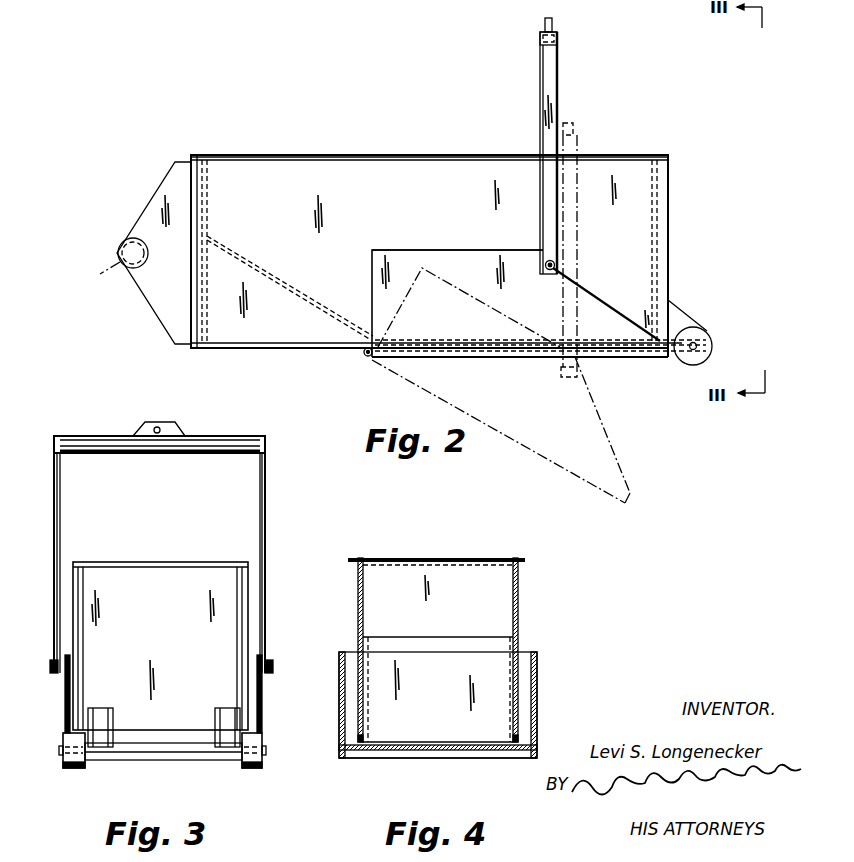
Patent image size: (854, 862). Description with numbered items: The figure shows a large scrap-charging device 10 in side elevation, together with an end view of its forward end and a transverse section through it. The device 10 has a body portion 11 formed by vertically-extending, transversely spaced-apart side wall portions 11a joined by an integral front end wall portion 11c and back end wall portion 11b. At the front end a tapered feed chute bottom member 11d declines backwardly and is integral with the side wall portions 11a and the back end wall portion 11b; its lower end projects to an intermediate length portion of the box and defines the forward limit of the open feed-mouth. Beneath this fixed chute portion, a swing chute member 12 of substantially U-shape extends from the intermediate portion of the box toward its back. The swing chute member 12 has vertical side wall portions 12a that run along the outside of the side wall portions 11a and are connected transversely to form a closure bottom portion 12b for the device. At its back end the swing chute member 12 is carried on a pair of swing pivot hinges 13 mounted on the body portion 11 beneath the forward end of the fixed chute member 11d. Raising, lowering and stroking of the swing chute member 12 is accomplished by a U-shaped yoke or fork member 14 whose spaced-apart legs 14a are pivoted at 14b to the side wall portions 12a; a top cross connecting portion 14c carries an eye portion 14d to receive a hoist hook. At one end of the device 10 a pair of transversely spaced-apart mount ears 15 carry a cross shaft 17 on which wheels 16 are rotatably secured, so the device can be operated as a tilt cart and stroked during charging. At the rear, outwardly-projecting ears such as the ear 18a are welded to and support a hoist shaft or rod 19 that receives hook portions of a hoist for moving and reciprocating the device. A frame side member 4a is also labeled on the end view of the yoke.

In FIG. 2, the device 10 is at (375, 196).
In FIG. 3, the device 10 is at (172, 601).
In FIG. 4, the device 10 is at (453, 558).
In FIG. 2, the body portion 11 is at (352, 158).
In FIG. 4, the body portion 11 is at (518, 602).
In FIG. 2, the side wall portions 11a is at (471, 160).
In FIG. 4, the side wall portions 11a is at (358, 580).
In FIG. 2, the back end wall portion 11b is at (207, 191).
In FIG. 2, the front end wall portion 11c is at (661, 192).
In FIG. 3, the front end wall portion 11c is at (175, 566).
In FIG. 2, the tapered feed chute bottom member 11d is at (259, 266).
In FIG. 4, the tapered feed chute bottom member 11d is at (445, 640).
In FIG. 2, the swing chute member 12 is at (530, 360).
In FIG. 4, the swing chute member 12 is at (538, 728).
In FIG. 2, the chute side wall portions 12a is at (463, 250).
In FIG. 3, the chute side wall portions 12a is at (65, 708).
In FIG. 4, the chute side wall portions 12a is at (339, 672).
In FIG. 2, the closure bottom portion 12b is at (608, 354).
In FIG. 4, the closure bottom portion 12b is at (461, 750).
In FIG. 2, the swing pivot hinges 13 is at (363, 354).
In FIG. 2, the yoke or fork member 14 is at (558, 100).
In FIG. 3, the yoke or fork member 14 is at (265, 522).
In FIG. 2, the legs 14a is at (550, 70).
In FIG. 3, the legs 14a is at (265, 470).
In FIG. 2, the pivot 14b is at (556, 268).
In FIG. 3, the pivot 14b is at (55, 672).
In FIG. 2, the top cross connecting portion 14c is at (558, 39).
In FIG. 3, the top cross connecting portion 14c is at (222, 436).
In FIG. 2, the eye portion 14d is at (545, 23).
In FIG. 3, the eye portion 14d is at (165, 421).
In FIG. 2, the mount ears 15 is at (690, 318).
In FIG. 3, the mount ears 15 is at (92, 708).
In FIG. 2, the wheels 16 is at (708, 336).
In FIG. 3, the wheels 16 is at (81, 768).
In FIG. 2, the cross shaft 17 is at (700, 351).
In FIG. 3, the cross shaft 17 is at (63, 751).
In FIG. 2, the tab or ear 18a is at (157, 189).
In FIG. 2, the hoist shaft or rod 19 is at (118, 263).
In FIG. 3, the frame side member 4a is at (54, 472).